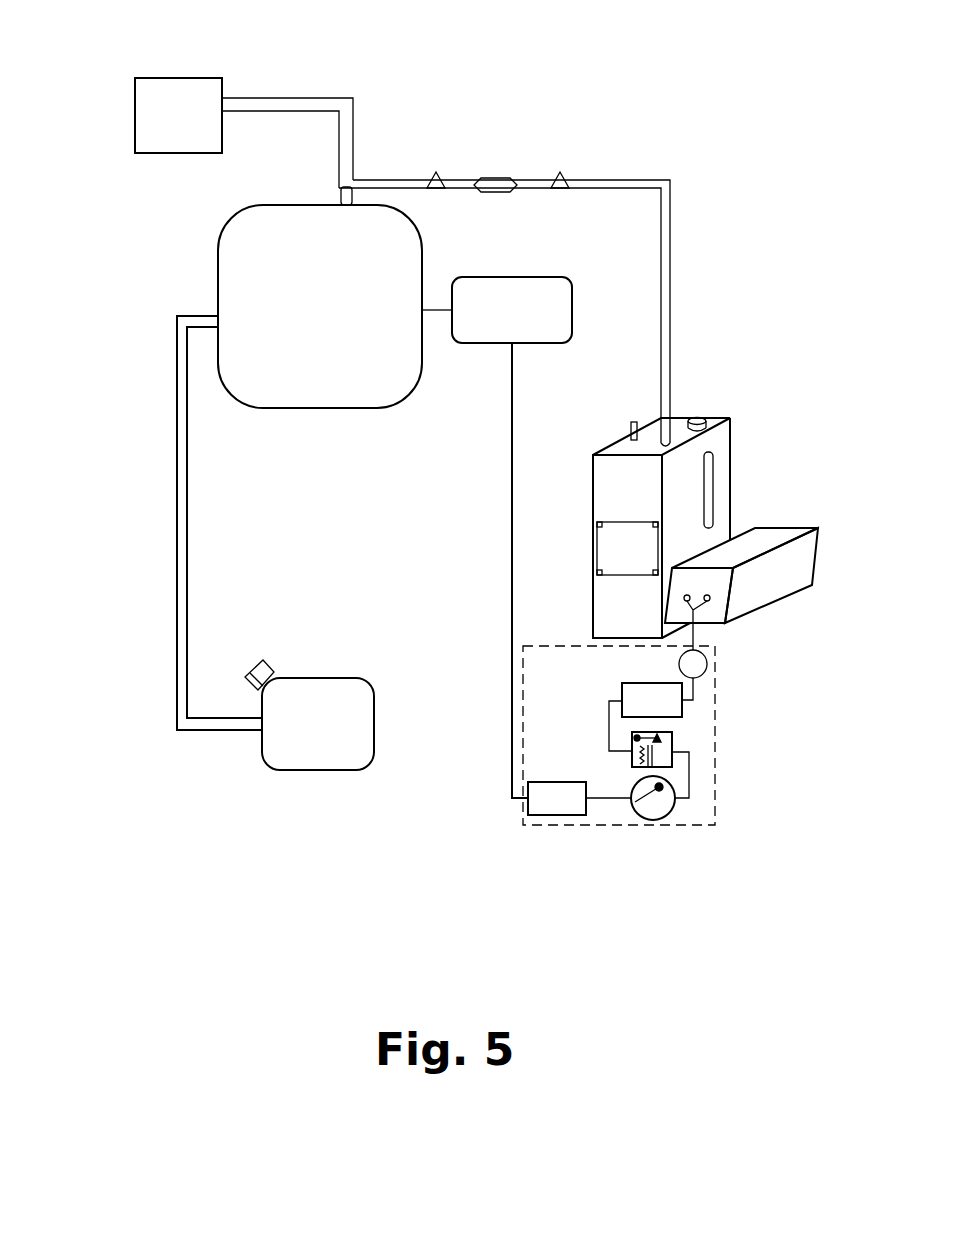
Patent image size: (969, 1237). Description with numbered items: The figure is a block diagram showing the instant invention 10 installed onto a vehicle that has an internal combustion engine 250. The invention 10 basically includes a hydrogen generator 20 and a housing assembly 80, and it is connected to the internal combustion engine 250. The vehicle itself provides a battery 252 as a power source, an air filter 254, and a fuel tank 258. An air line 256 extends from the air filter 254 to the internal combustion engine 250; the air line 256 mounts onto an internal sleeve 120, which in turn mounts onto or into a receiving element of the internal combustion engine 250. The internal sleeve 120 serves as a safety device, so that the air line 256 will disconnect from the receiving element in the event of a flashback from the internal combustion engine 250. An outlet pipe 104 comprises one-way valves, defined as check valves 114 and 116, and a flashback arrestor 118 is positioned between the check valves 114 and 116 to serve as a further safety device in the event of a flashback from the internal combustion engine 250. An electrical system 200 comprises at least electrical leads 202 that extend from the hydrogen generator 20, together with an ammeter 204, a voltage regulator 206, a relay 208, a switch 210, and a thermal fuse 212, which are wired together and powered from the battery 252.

The instant invention 10 is at (793, 428).
The hydrogen generator 20 is at (781, 515).
The housing assembly 80 is at (582, 470).
The outlet pipe 104 is at (672, 310).
The check valve 114 is at (560, 172).
The check valve 116 is at (434, 172).
The flashback arrestor 118 is at (495, 178).
The internal sleeve 120 is at (340, 193).
The electrical system 200 is at (514, 694).
The electrical leads 202 is at (695, 605).
The ammeter 204 is at (706, 663).
The voltage regulator 206 is at (682, 706).
The relay 208 is at (672, 742).
The switch 210 is at (675, 802).
The thermal fuse 212 is at (548, 815).
The internal combustion engine 250 is at (218, 258).
The battery 252 is at (545, 277).
The air filter 254 is at (135, 118).
The air line 256 is at (252, 97).
The fuel tank 258 is at (348, 678).